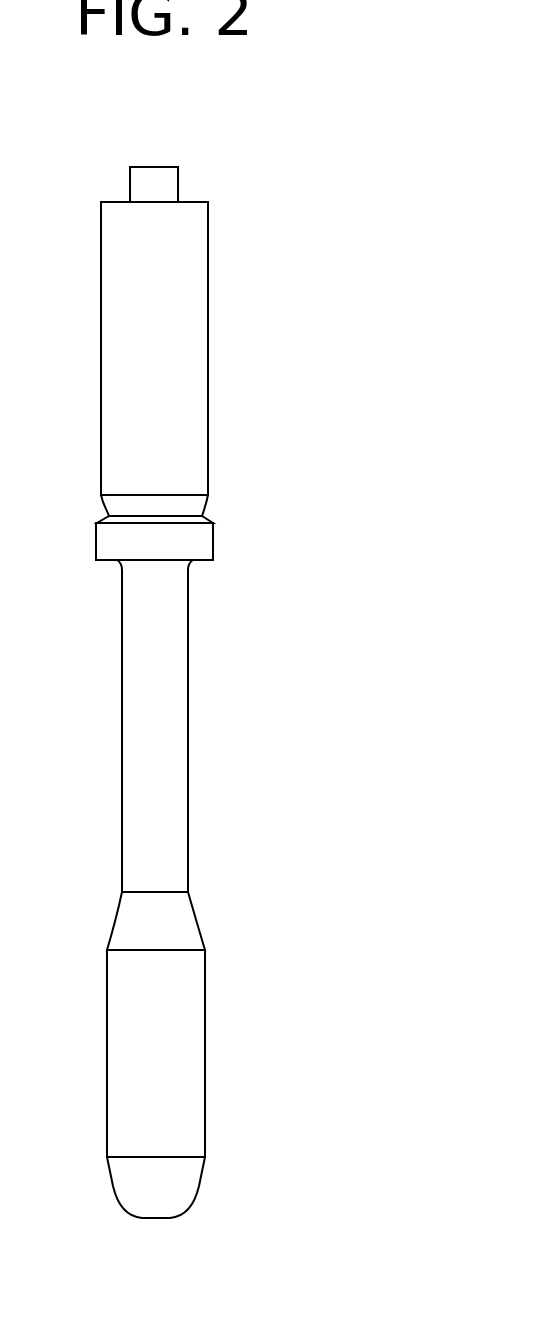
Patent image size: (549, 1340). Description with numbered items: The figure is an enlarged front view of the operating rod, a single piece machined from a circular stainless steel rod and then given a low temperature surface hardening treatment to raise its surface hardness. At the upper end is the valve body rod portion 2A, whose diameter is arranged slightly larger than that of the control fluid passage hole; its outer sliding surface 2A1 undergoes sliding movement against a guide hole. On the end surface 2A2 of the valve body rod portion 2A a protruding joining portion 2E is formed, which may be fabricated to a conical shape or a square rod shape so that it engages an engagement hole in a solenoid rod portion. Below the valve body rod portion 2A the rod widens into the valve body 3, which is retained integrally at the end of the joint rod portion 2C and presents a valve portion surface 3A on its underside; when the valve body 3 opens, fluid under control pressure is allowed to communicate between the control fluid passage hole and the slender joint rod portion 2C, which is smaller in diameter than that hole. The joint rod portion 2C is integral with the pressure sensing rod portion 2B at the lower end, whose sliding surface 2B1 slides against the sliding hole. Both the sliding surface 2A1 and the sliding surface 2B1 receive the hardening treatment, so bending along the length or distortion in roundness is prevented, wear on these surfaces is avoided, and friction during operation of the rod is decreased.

The valve body rod portion 2A is at (177, 350).
The sliding surface 2A1 is at (208, 227).
The end surface 2A2 is at (112, 201).
The joining portion 2E is at (178, 180).
The valve body 3 is at (185, 540).
The valve portion surface 3A is at (202, 562).
The joint rod portion 2C is at (177, 736).
The pressure sensing rod portion 2B is at (178, 1073).
The sliding surface 2B1 is at (205, 985).